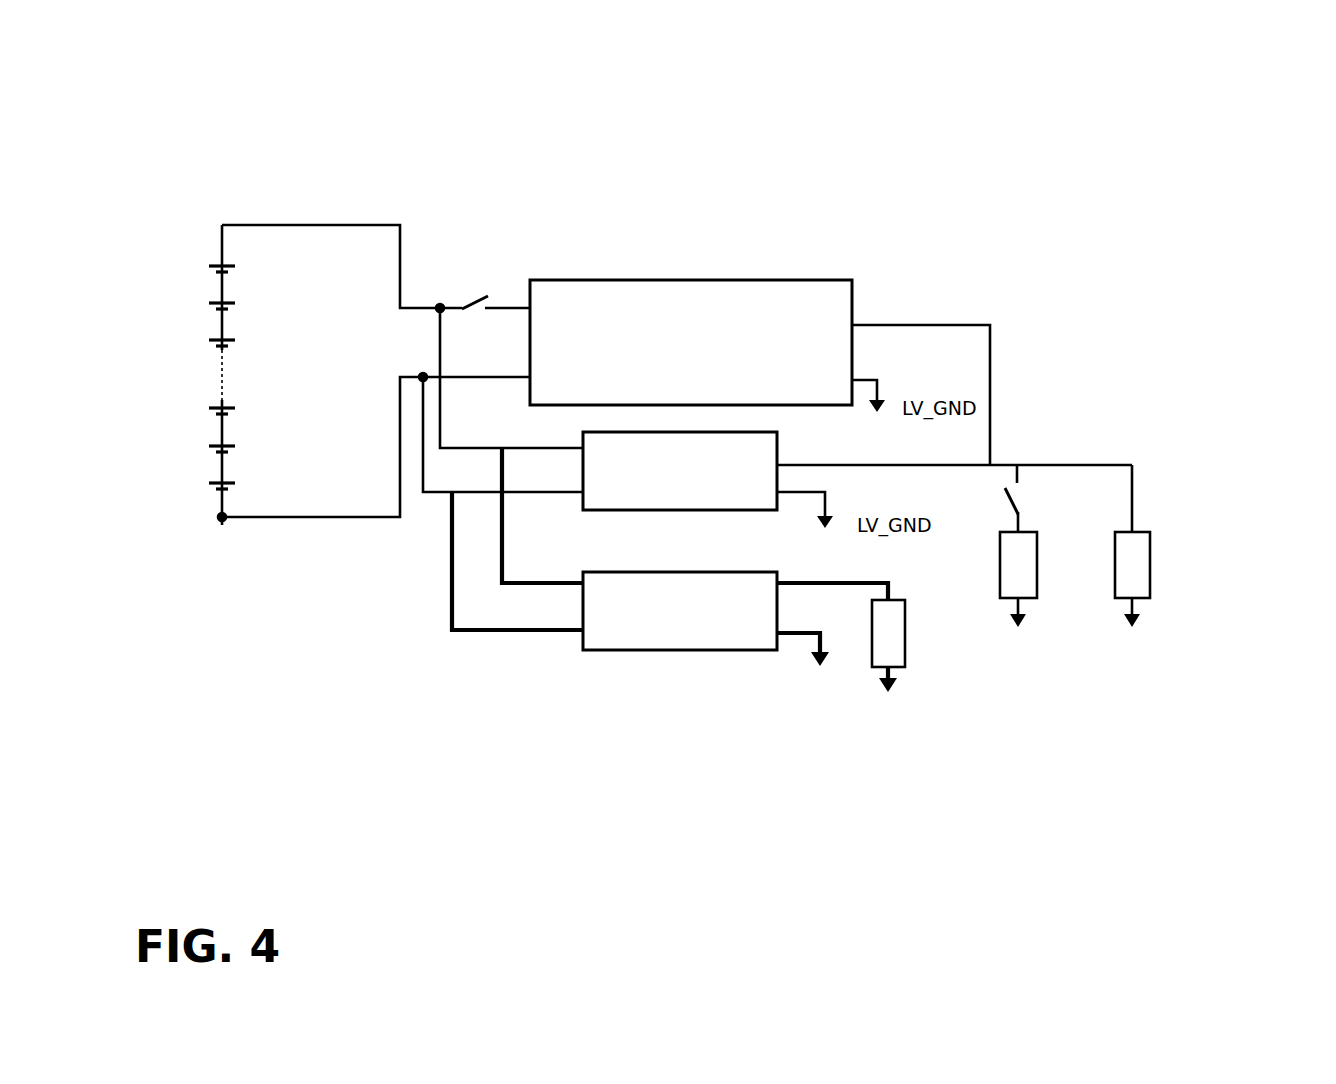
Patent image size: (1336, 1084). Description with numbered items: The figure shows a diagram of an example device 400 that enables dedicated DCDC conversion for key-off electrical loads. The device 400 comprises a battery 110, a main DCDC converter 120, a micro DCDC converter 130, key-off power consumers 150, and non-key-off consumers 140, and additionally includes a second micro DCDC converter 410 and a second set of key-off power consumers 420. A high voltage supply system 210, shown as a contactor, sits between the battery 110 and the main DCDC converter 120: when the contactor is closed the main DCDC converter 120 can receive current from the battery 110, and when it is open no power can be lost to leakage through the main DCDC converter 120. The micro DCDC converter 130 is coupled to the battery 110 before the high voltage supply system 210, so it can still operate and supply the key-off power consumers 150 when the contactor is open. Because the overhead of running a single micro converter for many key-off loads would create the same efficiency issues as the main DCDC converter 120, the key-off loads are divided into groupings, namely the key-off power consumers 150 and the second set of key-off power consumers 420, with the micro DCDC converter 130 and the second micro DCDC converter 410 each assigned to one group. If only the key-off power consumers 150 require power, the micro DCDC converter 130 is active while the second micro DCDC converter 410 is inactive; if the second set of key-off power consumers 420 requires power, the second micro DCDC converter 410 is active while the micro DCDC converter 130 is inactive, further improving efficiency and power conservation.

The device 400 is at (215, 88).
The battery 110 is at (213, 377).
The high voltage supply system 210 is at (464, 304).
The main DCDC converter 120 is at (590, 277).
The micro DCDC converter 130 is at (614, 517).
The non-key-off consumers 140 is at (994, 560).
The key-off power consumers 150 is at (1153, 557).
The second micro DCDC converter 410 is at (631, 653).
The second set of key-off power consumers 420 is at (914, 648).